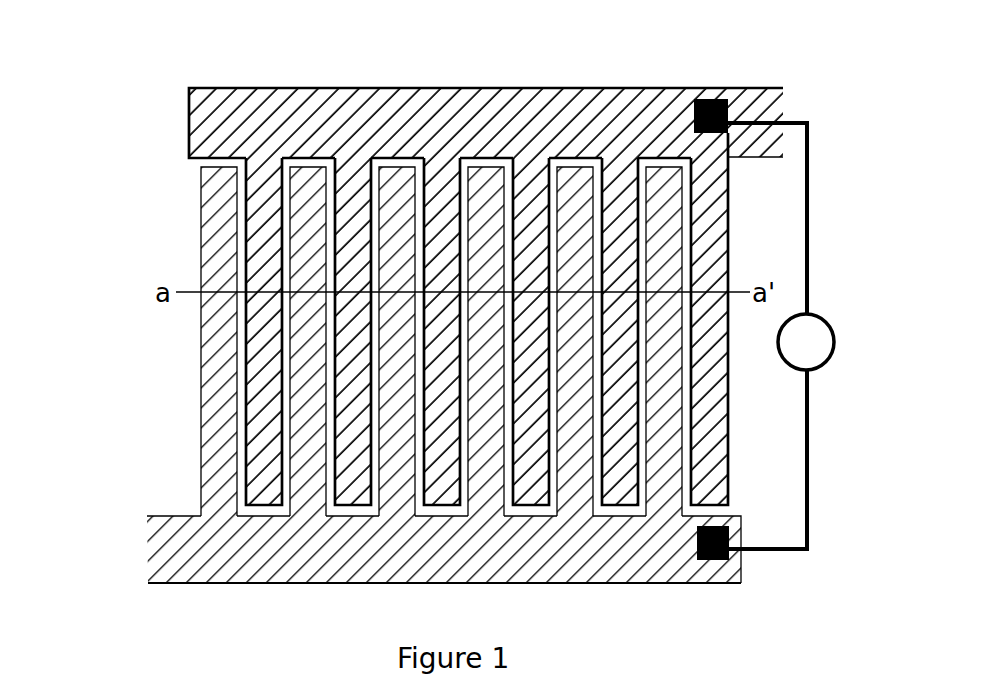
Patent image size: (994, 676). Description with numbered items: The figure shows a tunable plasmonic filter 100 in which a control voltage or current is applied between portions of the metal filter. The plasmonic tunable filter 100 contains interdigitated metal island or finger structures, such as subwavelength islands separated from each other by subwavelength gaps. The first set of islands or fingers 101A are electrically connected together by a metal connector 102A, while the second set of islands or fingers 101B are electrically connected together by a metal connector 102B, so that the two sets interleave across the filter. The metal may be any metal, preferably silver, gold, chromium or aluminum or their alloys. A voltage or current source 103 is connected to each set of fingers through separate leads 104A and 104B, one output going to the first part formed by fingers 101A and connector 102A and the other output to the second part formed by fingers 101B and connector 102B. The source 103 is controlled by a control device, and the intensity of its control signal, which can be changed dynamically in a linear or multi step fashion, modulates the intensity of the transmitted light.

The plasmonic tunable filter 100 is at (422, 336).
The first set of islands or fingers 101A is at (258, 167).
The second set of islands or fingers 101B is at (223, 472).
The metal connector 102A is at (312, 100).
The metal connector 102B is at (282, 583).
The voltage or current source 103 is at (828, 326).
The lead 104A is at (810, 187).
The lead 104B is at (788, 553).